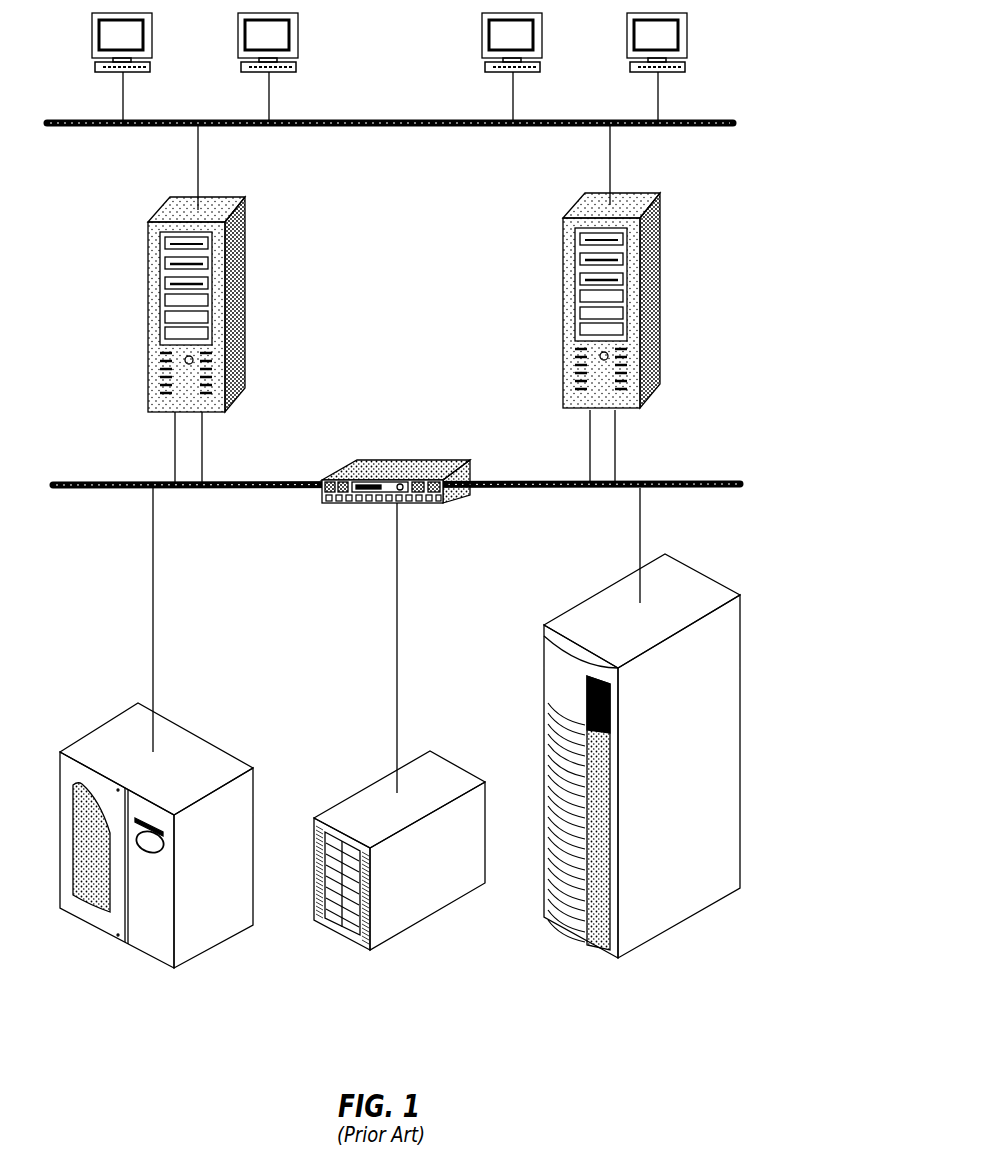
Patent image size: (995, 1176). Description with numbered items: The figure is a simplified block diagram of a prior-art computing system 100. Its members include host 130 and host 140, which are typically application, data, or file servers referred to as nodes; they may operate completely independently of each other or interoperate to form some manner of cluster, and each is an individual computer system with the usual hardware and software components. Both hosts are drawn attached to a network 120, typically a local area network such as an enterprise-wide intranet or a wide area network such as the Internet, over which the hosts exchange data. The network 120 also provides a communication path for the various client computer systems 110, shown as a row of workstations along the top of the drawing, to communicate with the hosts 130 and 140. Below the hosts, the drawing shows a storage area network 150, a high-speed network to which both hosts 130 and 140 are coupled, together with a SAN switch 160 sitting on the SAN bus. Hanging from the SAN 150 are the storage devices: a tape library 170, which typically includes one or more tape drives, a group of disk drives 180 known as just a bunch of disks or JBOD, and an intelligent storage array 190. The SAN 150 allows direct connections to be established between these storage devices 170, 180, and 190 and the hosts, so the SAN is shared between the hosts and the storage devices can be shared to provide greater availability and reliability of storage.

The computing system 100 is at (630, 1095).
The client computer systems 110 is at (688, 37).
The network 120 is at (700, 126).
The host 130 is at (148, 309).
The host 140 is at (563, 305).
The storage area network (SAN) 150 is at (665, 480).
The SAN switch 160 is at (335, 505).
The tape library 170 is at (190, 748).
The group of disk drives (JBOD) 180 is at (433, 770).
The intelligent storage array 190 is at (745, 770).